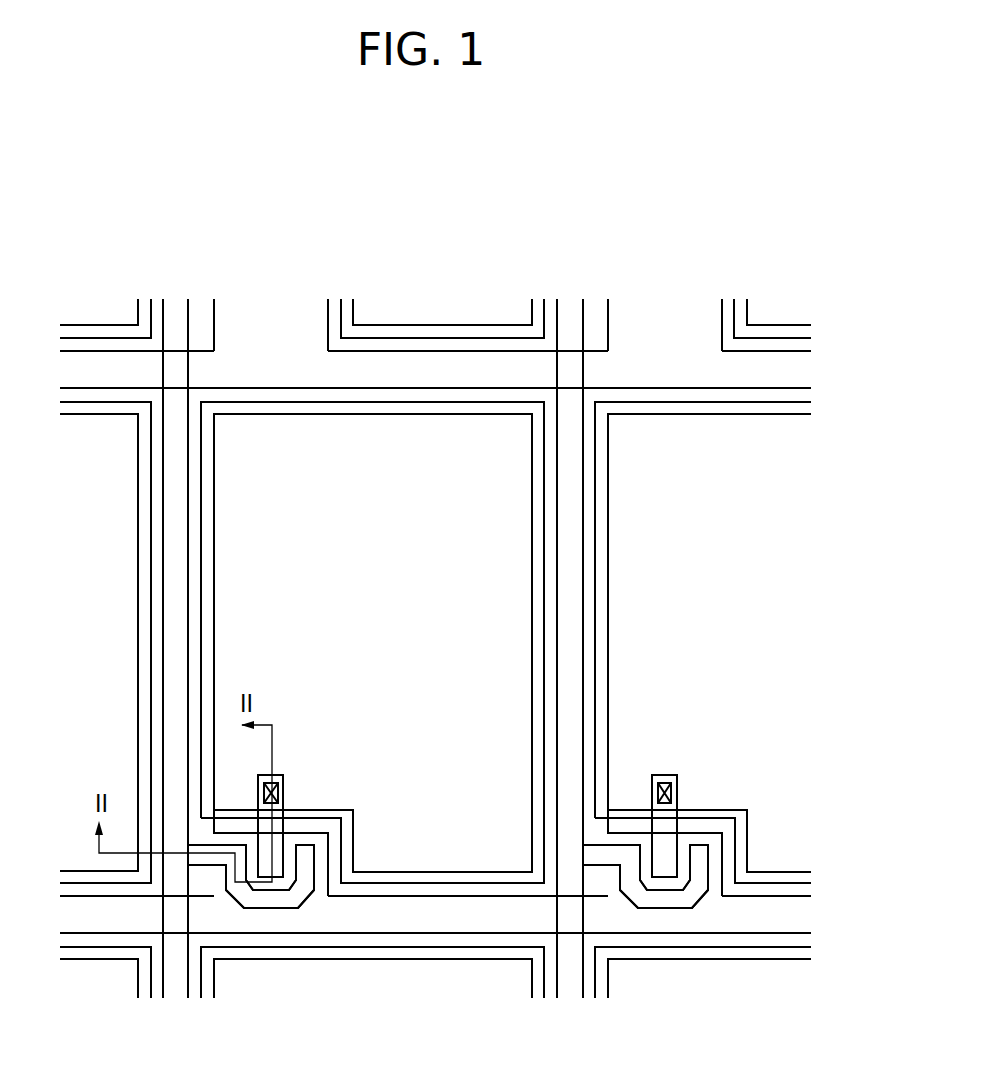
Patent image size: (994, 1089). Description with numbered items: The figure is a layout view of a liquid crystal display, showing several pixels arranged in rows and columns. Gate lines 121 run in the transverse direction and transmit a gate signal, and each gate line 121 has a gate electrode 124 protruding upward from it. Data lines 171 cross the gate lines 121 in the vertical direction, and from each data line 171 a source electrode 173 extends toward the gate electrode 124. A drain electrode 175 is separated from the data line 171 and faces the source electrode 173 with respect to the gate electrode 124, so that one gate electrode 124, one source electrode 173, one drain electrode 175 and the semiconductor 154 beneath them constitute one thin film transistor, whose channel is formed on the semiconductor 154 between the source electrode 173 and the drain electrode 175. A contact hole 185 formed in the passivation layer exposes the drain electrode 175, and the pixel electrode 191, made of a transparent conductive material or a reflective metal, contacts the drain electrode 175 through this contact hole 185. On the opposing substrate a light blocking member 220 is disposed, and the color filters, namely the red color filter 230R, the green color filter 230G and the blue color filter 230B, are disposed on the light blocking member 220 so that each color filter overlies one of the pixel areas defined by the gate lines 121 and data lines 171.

The gate line 121 is at (390, 935).
The gate electrode 124 is at (331, 862).
The semiconductor layer 154 is at (292, 848).
The data line 171 is at (163, 602).
The source electrode 173 is at (272, 908).
The drain electrode 175 is at (285, 803).
The contact hole 185 is at (277, 795).
The pixel electrode 191 is at (202, 465).
The light blocking member 220 is at (213, 515).
The red color filter 230R is at (107, 618).
The green color filter 230G is at (404, 618).
The blue color filter 230B is at (750, 618).